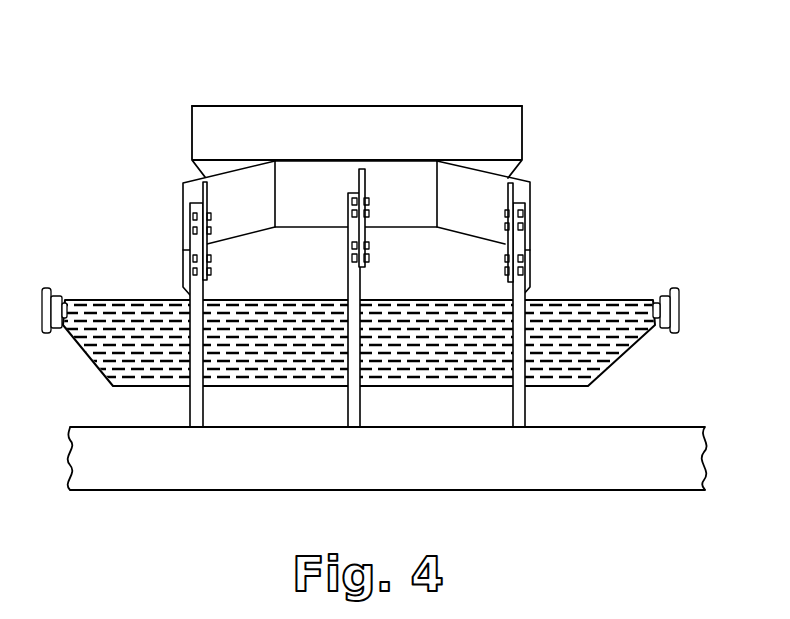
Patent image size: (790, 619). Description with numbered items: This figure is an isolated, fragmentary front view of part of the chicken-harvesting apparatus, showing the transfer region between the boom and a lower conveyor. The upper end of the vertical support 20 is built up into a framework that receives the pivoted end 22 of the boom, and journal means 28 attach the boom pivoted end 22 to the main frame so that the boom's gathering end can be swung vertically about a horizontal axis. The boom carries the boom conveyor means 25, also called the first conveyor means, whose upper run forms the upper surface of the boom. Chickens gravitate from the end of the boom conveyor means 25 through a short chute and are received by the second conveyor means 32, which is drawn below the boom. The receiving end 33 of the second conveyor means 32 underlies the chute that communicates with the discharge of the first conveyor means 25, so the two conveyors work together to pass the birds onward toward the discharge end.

The vertical support 20 is at (528, 101).
The pivoted end of the boom 22 is at (409, 80).
The boom conveyor means 25 is at (305, 85).
The journal means 28 is at (526, 133).
The second conveyor means 32 is at (603, 287).
The receiving end 33 is at (682, 308).